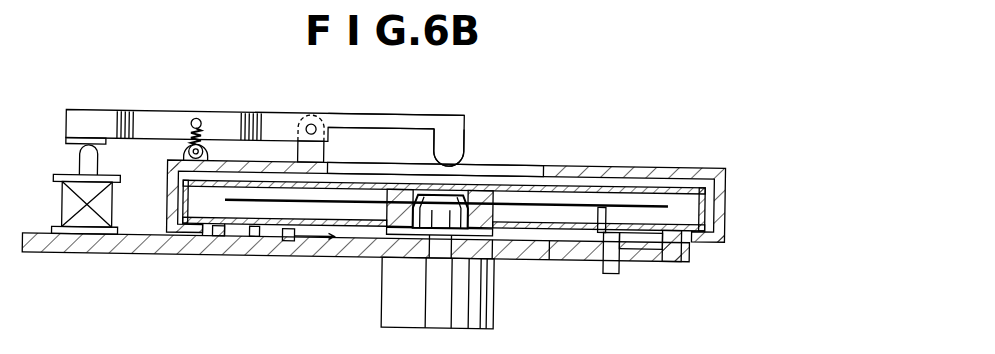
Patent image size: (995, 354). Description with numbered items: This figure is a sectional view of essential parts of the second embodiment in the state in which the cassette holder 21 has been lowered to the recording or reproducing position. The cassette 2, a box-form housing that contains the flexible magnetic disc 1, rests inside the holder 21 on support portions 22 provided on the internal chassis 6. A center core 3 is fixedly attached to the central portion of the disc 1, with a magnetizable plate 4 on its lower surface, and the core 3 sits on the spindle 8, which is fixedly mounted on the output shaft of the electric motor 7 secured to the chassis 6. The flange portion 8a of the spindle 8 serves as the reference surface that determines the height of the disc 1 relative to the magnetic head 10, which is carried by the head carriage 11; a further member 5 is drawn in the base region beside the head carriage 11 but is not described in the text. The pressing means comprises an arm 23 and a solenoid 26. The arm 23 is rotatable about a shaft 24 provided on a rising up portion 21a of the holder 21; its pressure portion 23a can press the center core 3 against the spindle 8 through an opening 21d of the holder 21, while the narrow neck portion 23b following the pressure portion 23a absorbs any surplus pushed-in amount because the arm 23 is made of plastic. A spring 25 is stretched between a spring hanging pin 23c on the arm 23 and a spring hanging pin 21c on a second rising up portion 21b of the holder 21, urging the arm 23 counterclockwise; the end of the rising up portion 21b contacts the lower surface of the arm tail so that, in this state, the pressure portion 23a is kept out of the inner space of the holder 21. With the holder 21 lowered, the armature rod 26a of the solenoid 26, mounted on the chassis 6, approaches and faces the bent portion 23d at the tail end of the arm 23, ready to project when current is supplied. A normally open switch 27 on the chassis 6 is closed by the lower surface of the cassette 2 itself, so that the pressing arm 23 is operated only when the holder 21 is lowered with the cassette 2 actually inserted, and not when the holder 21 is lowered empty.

The flexible magnetic disc 1 is at (240, 200).
The cassette 2 is at (232, 228).
The center core 3 is at (491, 179).
The magnetizable plate 4 is at (510, 252).
The block 5 is at (645, 238).
The internal chassis 6 is at (318, 248).
The electric motor 7 is at (383, 292).
The spindle 8 is at (428, 190).
The flange portion 8a is at (456, 252).
The magnetic head 10 is at (598, 208).
The head carriage 11 is at (610, 277).
The cassette holder 21 is at (680, 166).
The rising up portion 21a is at (325, 149).
The rising up portion 21b is at (207, 153).
The spring hanging pin 21c is at (186, 150).
The opening 21d is at (493, 168).
The support portions 22 is at (255, 238).
The arm 23 is at (277, 122).
The pressure portion 23a is at (458, 148).
The narrow neck portion 23b is at (383, 120).
The spring hanging pin 23c is at (196, 118).
The bent portion 23d is at (84, 139).
The shaft 24 is at (310, 121).
The spring 25 is at (190, 135).
The solenoid 26 is at (106, 204).
The armature rod 26a is at (78, 163).
The normally open type switch 27 is at (285, 242).